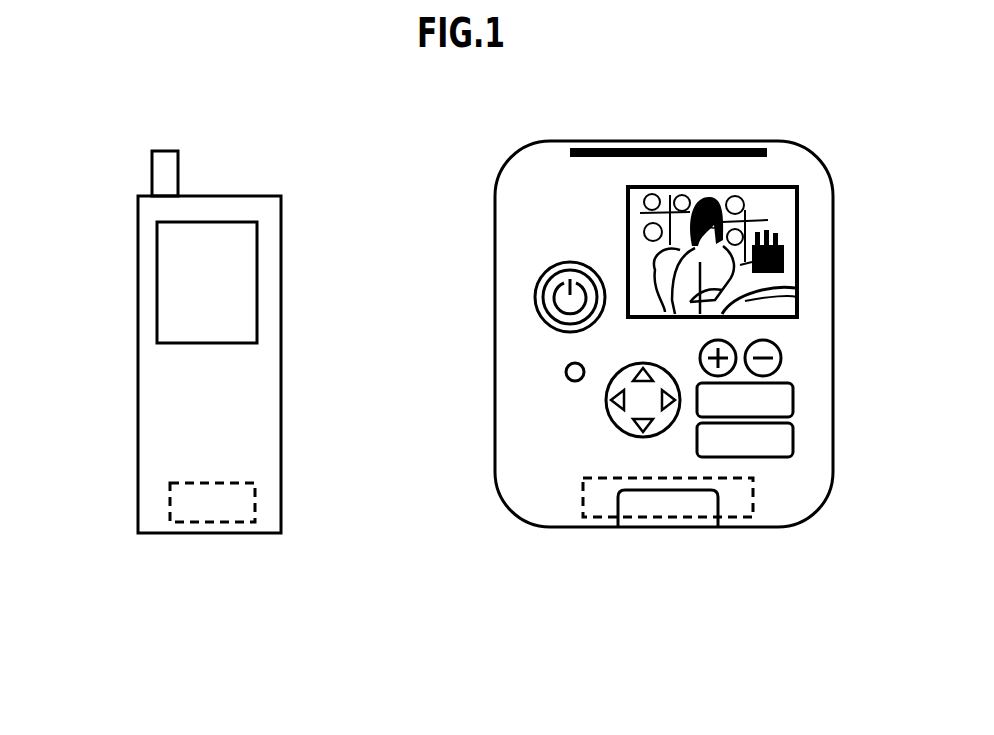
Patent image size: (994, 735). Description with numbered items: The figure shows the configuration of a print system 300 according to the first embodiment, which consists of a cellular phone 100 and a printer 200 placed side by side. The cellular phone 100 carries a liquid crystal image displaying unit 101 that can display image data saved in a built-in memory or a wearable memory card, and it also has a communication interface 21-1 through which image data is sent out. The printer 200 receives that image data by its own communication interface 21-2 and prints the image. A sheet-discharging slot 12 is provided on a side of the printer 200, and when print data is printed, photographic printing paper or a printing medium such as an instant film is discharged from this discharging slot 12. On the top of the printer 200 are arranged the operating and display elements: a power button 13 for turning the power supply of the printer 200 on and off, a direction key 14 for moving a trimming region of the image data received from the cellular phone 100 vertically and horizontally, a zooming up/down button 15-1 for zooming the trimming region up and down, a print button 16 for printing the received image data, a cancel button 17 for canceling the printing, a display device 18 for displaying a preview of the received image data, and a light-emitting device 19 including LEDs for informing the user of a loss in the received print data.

The cellular phone 100 is at (273, 377).
The liquid crystal image displaying unit 101 is at (160, 280).
The communication interface 21-1 is at (172, 484).
The printer 200 is at (808, 510).
The sheet-discharging slot 12 is at (670, 150).
The power button 13 is at (548, 273).
The display device 18 is at (797, 215).
The light-emitting device 19 is at (575, 362).
The direction key 14 is at (608, 397).
The zooming up/down button 15-1 is at (700, 339).
The print button 16 is at (793, 398).
The cancel button 17 is at (793, 440).
The communication interface 21-2 is at (590, 505).
The print system 300 is at (920, 608).